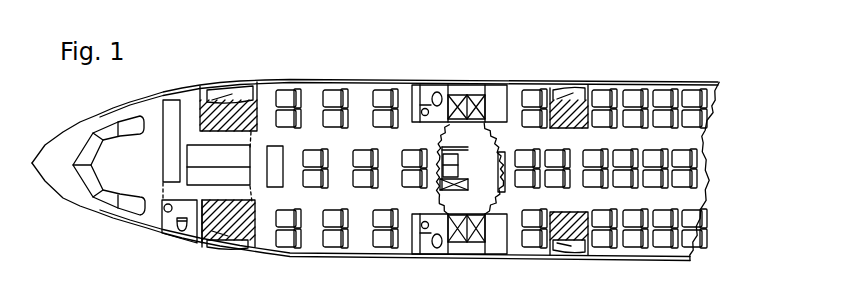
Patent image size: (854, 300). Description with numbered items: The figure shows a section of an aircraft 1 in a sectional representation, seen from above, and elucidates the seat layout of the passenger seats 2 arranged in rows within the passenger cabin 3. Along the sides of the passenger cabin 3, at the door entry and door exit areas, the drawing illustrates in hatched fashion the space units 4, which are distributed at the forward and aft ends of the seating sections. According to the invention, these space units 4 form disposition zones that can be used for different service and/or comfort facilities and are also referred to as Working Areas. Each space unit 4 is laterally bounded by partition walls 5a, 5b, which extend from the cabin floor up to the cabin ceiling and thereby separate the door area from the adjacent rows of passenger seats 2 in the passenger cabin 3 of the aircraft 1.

The aircraft 1 is at (517, 73).
The passenger seats 2 is at (633, 98).
The passenger cabin 3 is at (685, 143).
The space units 4 is at (254, 101).
The partition wall 5a is at (202, 92).
The partition wall 5b is at (258, 82).